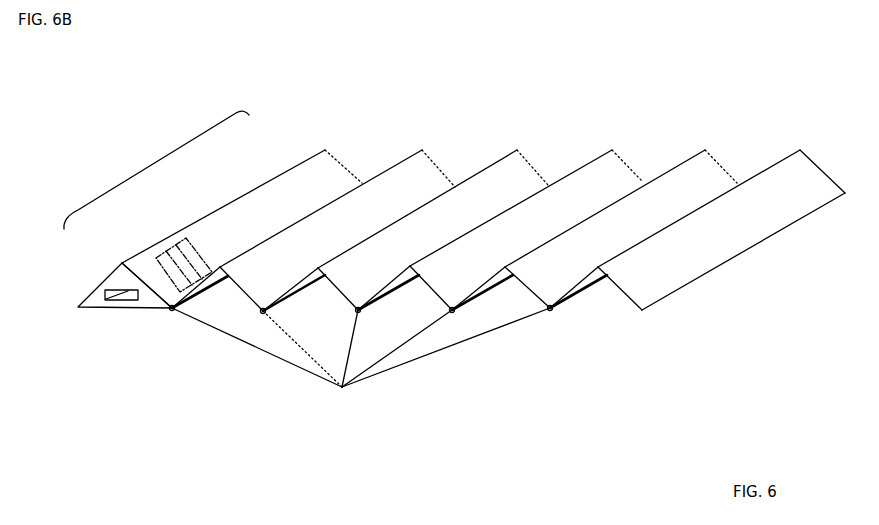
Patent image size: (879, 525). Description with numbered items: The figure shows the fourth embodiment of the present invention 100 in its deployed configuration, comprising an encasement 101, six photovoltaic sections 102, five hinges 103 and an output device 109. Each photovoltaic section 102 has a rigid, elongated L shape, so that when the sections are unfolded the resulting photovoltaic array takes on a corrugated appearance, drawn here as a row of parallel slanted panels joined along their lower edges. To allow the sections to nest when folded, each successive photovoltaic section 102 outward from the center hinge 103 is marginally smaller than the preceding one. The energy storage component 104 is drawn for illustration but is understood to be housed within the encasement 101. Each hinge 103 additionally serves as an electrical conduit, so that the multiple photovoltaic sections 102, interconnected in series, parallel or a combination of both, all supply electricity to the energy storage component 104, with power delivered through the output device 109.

The present invention 100 is at (150, 158).
The encasement 101 is at (92, 302).
The photovoltaic sections 102 is at (563, 125).
The hinges 103 is at (361, 359).
The energy storage component 104 is at (154, 260).
The output device 109 is at (127, 298).